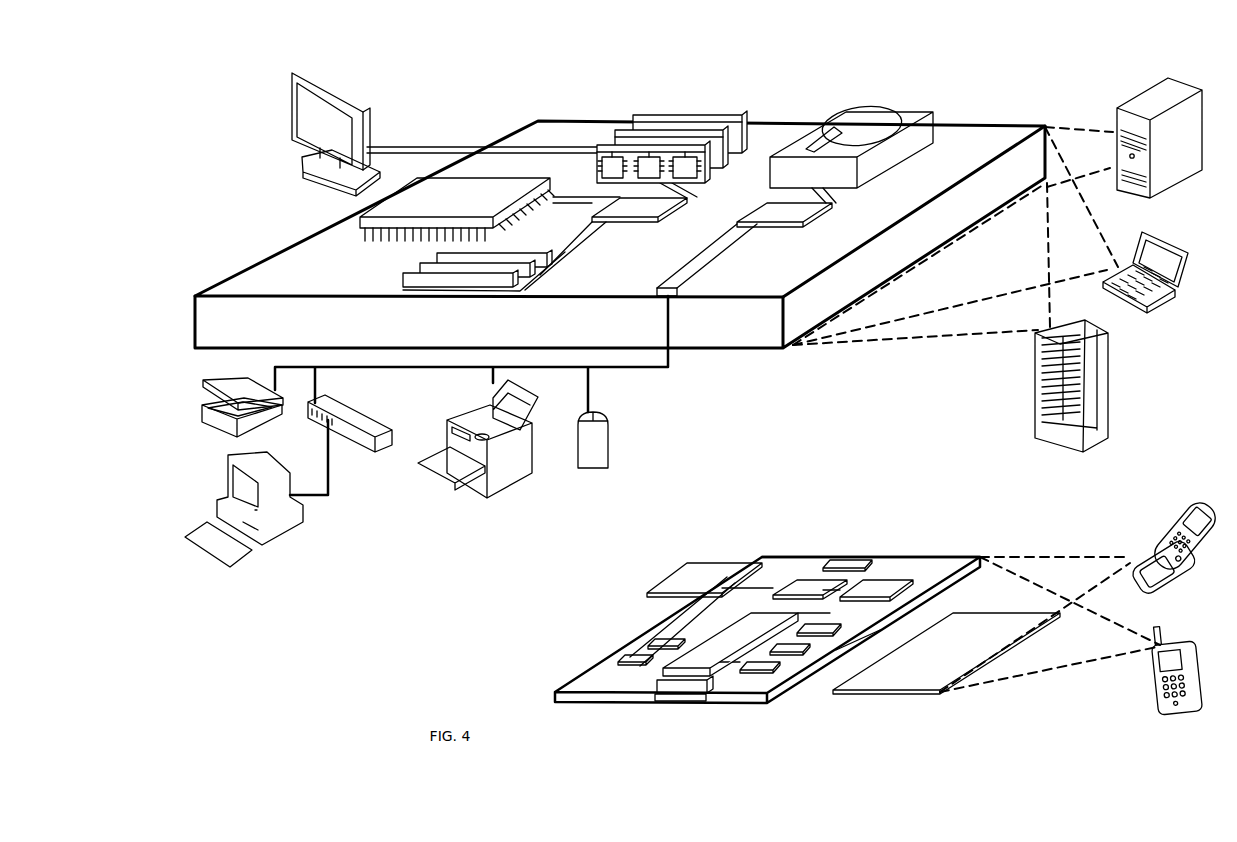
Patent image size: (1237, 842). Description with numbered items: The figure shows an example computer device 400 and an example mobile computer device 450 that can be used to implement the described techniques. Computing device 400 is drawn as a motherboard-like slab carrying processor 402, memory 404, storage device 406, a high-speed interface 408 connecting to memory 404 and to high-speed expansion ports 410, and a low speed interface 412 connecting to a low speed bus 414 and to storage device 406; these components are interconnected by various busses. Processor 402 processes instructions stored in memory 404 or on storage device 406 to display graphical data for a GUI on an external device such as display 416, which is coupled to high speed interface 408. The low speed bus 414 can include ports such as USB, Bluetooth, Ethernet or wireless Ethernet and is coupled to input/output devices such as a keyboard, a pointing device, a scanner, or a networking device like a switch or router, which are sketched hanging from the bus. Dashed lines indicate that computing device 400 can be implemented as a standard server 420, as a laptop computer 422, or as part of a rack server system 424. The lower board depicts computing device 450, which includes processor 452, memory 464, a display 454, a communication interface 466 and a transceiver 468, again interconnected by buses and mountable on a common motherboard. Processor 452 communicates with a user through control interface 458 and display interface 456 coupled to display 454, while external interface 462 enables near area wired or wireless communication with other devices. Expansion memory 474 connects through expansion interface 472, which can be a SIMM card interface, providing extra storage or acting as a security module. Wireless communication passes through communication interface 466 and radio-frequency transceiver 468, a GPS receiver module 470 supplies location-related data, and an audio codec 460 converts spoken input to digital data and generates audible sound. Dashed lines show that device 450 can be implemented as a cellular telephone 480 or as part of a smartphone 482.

The computing device 400 is at (473, 97).
The processor 402 is at (358, 219).
The memory 404 is at (654, 118).
The storage device 406 is at (853, 106).
The high-speed interface 408 is at (617, 207).
The high-speed expansion ports 410 is at (420, 260).
The low speed interface 412 is at (785, 214).
The low speed bus 414 is at (680, 296).
The display 416 is at (292, 80).
The standard server 420 is at (1117, 112).
The laptop computer 422 is at (1142, 234).
The rack server system 424 is at (1035, 405).
The mobile computer device 450 is at (749, 533).
The processor 452 is at (703, 684).
The display 454 is at (940, 694).
The display interface 456 is at (773, 694).
The control interface 458 is at (808, 657).
The audio codec 460 is at (817, 640).
The external interface 462 is at (680, 698).
The memory 464 is at (640, 652).
The communication interface 466 is at (810, 588).
The transceiver 468 is at (878, 588).
The GPS receiver module 470 is at (850, 563).
The expansion interface 472 is at (749, 561).
The expansion memory 474 is at (688, 563).
The cellular telephone 480 is at (1185, 506).
The smartphone 482 is at (1164, 628).